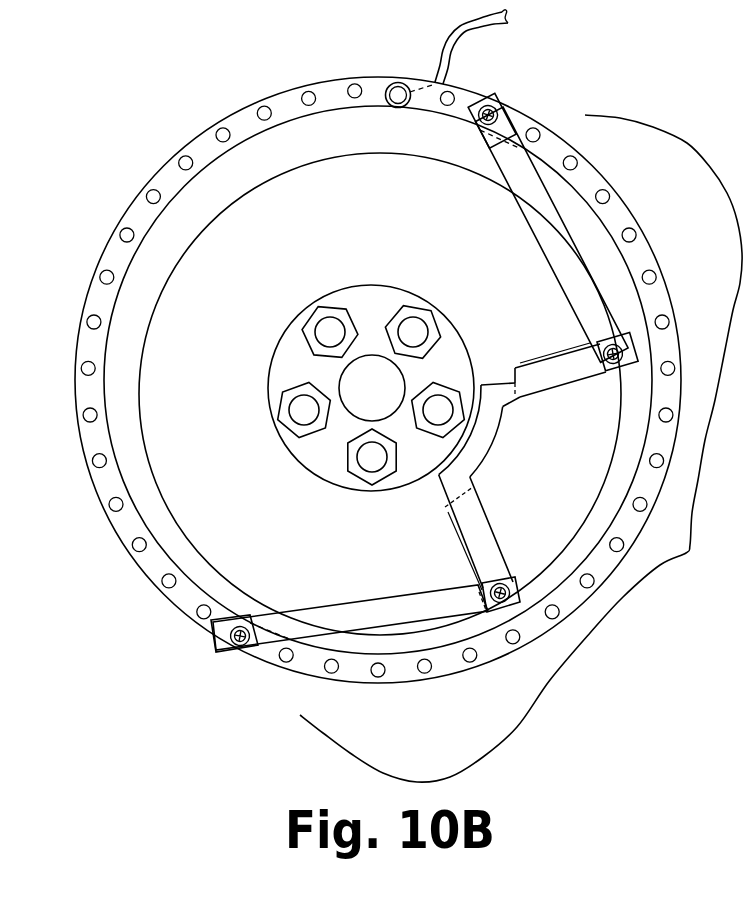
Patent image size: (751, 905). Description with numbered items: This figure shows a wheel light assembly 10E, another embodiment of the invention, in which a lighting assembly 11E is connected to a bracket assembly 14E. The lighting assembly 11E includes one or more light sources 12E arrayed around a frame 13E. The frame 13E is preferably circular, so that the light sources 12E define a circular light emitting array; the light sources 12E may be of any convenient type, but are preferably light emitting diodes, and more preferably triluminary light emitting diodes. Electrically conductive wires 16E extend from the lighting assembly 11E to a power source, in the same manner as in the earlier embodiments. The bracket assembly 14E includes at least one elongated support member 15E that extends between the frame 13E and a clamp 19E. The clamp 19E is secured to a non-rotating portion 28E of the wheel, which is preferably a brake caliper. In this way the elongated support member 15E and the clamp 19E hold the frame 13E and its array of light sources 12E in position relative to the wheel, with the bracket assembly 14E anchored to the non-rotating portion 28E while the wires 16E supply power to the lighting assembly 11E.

The wheel light assembly 10E is at (118, 102).
The lighting assembly 11E is at (408, 41).
The light sources 12E is at (393, 85).
The frame 13E is at (289, 91).
The bracket assembly 14E is at (690, 550).
The elongated support member 15E is at (531, 236).
The electrically conductive wires 16E is at (455, 40).
The clamp 19E is at (444, 492).
The non-rotating portion of the wheel 28E is at (566, 477).